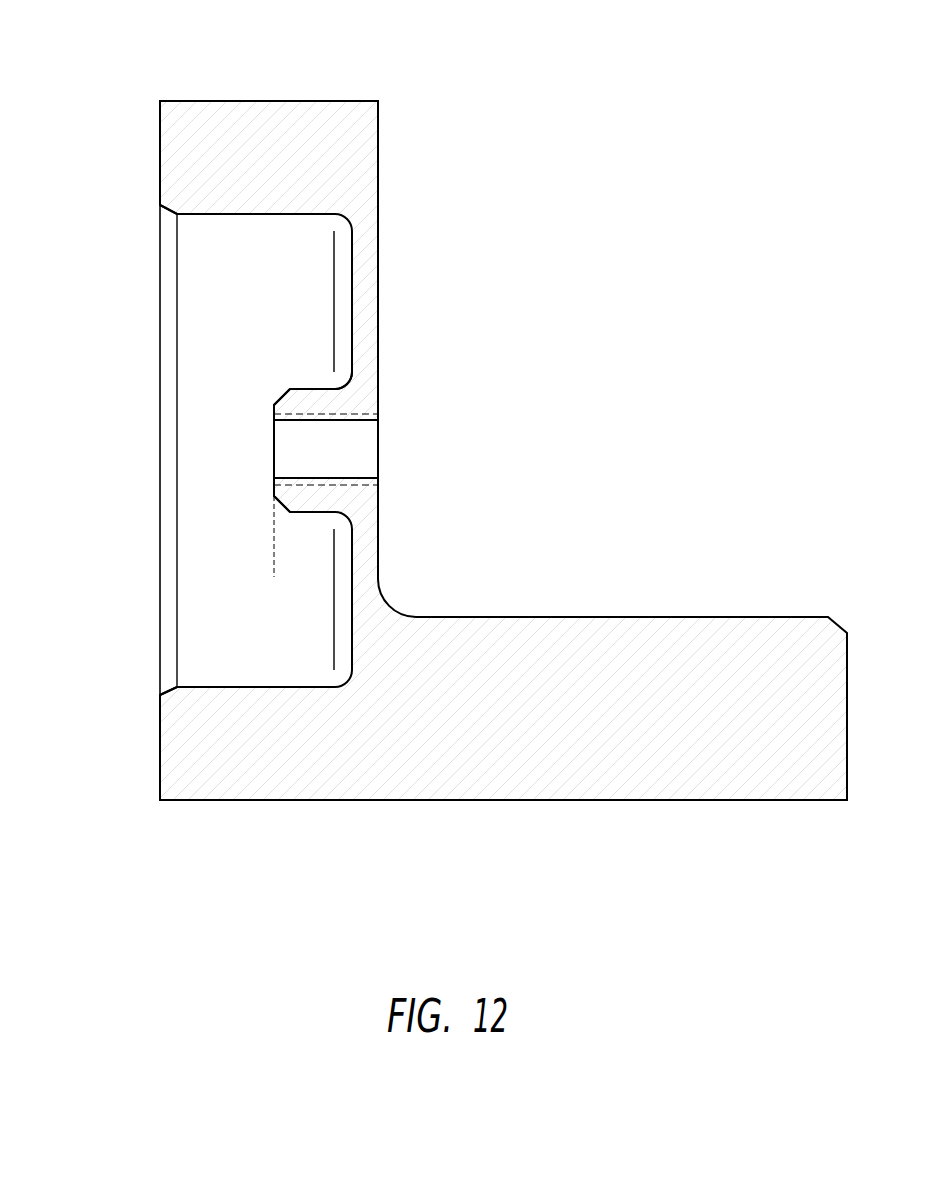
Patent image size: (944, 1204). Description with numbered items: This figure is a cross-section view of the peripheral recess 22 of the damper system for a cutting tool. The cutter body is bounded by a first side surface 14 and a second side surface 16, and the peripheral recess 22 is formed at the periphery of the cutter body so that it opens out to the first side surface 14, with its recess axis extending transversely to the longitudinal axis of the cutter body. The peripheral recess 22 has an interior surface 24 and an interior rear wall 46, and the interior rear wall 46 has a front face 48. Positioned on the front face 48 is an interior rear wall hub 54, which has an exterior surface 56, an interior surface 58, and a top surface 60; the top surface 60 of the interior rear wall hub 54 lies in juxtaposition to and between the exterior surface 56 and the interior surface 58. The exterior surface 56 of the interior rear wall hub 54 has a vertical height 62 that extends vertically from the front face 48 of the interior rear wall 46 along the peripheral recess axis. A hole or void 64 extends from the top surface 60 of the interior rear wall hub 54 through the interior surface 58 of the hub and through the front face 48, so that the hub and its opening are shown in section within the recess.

The first side surface 14 is at (158, 140).
The second side surface 16 is at (378, 145).
The peripheral recess 22 is at (138, 231).
The interior surface 24 is at (265, 213).
The interior rear wall 46 is at (317, 339).
The front face 48 is at (353, 287).
The interior rear wall hub 54 is at (262, 510).
The exterior surface 56 is at (318, 374).
The interior surface 58 is at (288, 452).
The top surface 60 is at (278, 402).
The vertical height 62 is at (352, 557).
The hole or void 64 is at (350, 450).